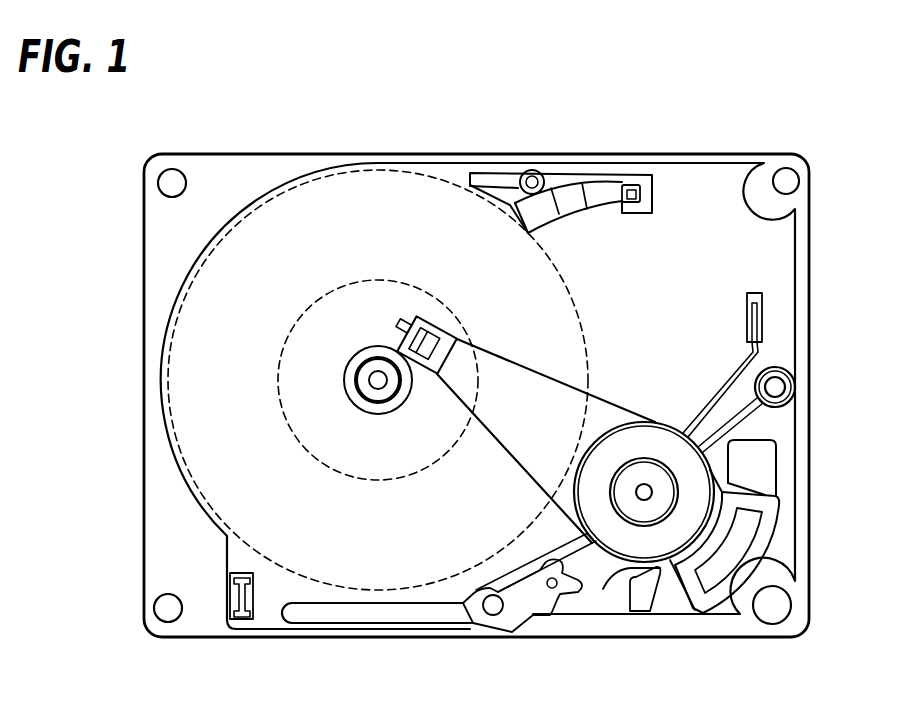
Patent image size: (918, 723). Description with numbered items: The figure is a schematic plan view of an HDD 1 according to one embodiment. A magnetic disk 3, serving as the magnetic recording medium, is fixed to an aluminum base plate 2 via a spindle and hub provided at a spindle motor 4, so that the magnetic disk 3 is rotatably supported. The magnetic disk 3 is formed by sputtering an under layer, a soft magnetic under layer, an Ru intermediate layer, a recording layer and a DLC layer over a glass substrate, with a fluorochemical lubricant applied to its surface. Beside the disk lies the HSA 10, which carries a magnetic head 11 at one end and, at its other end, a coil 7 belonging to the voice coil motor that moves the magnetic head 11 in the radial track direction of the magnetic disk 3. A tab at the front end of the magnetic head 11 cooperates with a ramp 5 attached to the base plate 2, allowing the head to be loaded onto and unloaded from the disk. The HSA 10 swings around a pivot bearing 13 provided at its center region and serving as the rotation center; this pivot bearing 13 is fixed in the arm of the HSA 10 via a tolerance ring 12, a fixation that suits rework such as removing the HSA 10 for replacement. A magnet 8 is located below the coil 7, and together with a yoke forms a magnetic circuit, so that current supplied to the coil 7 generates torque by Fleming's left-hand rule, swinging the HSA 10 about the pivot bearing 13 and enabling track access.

The disk drive device 1 is at (756, 93).
The aluminum base plate 2 is at (772, 638).
The magnetic disk 3 is at (226, 421).
The spindle motor 4 is at (307, 363).
The ramp 5 is at (623, 211).
The coil 7 is at (766, 532).
The magnet 8 is at (760, 464).
The HSA (Head Stack Assembly) 10 is at (531, 389).
The magnetic head 11 is at (412, 318).
The tolerance ring 12 is at (618, 508).
The pivot bearing 13 is at (647, 502).